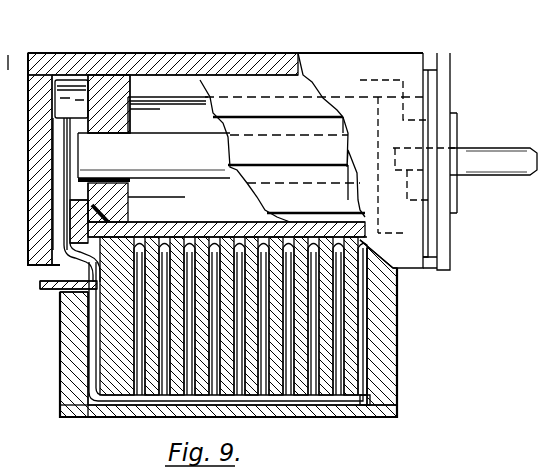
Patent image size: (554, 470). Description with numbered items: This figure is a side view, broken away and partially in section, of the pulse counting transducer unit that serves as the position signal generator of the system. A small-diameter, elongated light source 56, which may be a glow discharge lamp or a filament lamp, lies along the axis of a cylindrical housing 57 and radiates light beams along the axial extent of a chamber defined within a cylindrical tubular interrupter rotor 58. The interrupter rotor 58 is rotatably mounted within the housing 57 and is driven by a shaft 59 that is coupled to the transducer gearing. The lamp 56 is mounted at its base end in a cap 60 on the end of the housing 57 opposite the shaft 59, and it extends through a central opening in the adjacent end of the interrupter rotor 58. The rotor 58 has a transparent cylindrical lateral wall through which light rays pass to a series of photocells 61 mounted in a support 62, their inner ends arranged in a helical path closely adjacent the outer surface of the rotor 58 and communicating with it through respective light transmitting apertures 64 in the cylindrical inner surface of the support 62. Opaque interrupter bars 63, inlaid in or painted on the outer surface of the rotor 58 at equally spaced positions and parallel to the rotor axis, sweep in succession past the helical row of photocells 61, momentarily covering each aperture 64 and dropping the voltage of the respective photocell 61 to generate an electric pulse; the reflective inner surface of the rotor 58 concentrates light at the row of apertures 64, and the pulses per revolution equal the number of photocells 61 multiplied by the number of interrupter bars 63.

The light source 56 is at (184, 151).
The cylindrical housing 57 is at (228, 40).
The interrupter rotor 58 is at (166, 43).
The shaft 59 is at (505, 134).
The cap 60 is at (40, 63).
The photocells 61 is at (362, 314).
The support 62 is at (380, 361).
The interrupter bars 63 is at (303, 151).
The light transmitting apertures 64 is at (184, 235).